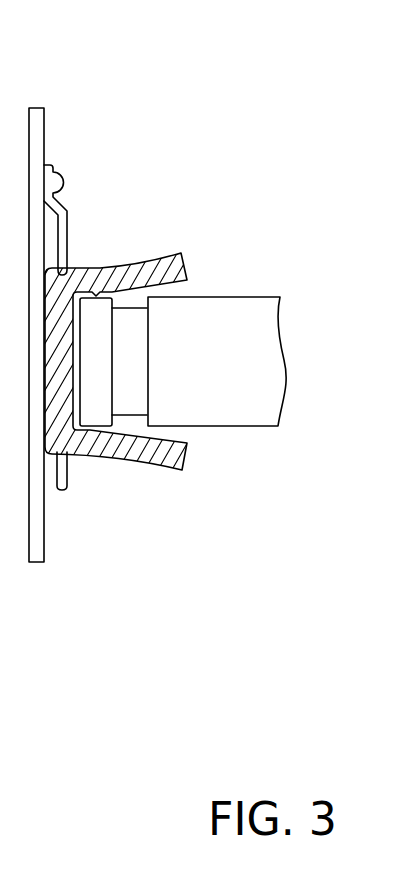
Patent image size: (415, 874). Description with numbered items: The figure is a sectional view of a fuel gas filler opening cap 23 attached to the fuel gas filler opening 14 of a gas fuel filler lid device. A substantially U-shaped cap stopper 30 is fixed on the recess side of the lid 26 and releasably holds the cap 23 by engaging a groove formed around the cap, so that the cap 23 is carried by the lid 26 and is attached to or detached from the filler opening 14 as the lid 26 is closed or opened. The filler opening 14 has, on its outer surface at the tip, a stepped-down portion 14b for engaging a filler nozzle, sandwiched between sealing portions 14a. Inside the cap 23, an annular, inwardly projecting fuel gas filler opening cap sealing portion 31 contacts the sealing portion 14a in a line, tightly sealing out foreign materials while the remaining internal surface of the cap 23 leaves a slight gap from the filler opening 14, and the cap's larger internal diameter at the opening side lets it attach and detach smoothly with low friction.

The fuel gas filler opening 14 is at (257, 297).
The sealing portion 14a is at (93, 333).
The stepped-down portion 14b is at (133, 413).
The fuel gas filler opening cap 23 is at (85, 268).
The lid 26 is at (40, 103).
The cap stopper 30 is at (68, 203).
The fuel gas filler opening cap sealing portion 31 is at (93, 297).